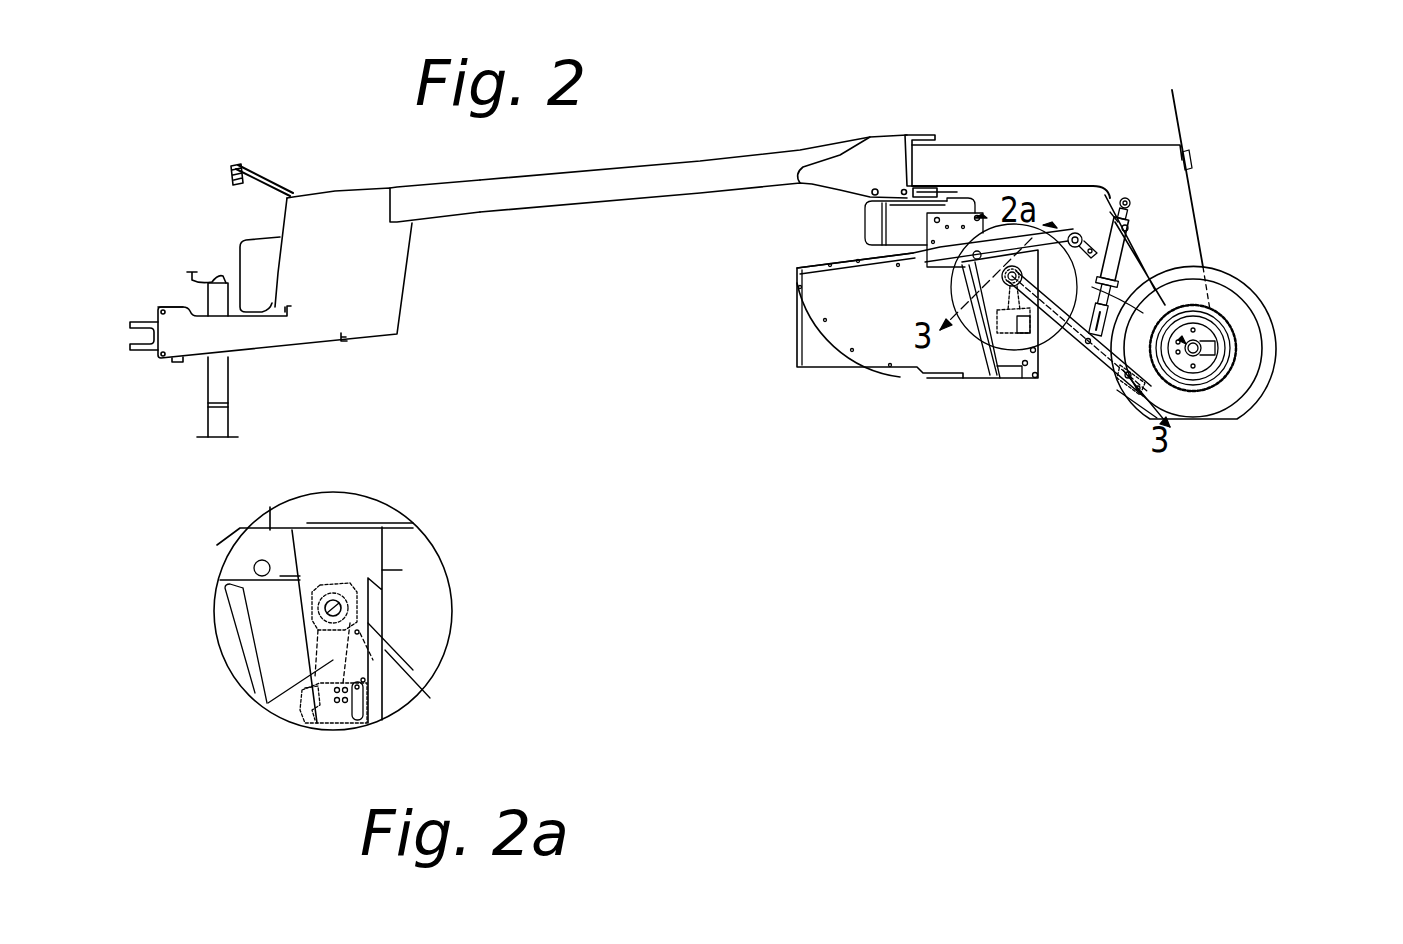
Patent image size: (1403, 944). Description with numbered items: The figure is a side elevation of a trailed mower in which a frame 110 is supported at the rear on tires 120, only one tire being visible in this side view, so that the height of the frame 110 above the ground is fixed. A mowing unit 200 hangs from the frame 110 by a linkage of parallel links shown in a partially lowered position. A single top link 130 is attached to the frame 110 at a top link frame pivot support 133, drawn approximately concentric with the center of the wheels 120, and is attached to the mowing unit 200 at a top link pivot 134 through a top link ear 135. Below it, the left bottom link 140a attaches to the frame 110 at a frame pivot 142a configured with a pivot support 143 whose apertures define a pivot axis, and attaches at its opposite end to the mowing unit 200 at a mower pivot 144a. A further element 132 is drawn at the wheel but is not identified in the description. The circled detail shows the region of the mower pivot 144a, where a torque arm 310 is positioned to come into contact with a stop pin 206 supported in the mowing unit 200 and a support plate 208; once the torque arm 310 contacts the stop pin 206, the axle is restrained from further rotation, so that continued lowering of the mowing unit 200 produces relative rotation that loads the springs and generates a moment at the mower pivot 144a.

In FIG. 2, the frame 110 is at (1065, 152).
In FIG. 2, the tires 120 is at (1214, 268).
In FIG. 2, the top link 130 is at (1140, 270).
In FIG. 2, the wheel rim 132 is at (1223, 307).
In FIG. 2, the top link frame pivot support 133 is at (1225, 334).
In FIG. 2, the top link pivot 134 is at (1100, 253).
In FIG. 2, the top link ear 135 is at (1058, 232).
In FIG. 2, the bottom link 140a is at (1100, 253).
In FIG. 2A, the bottom link 140a is at (400, 663).
In FIG. 2, the frame pivot 142a is at (1165, 350).
In FIG. 2, the pivot support 143 is at (1177, 413).
In FIG. 2, the mower pivot 144a is at (1033, 247).
In FIG. 2A, the mower pivot 144a is at (310, 620).
In FIG. 2, the mowing unit 200 is at (891, 317).
In FIG. 2, the stop pin 206 is at (1017, 380).
In FIG. 2A, the stop pin 206 is at (363, 702).
In FIG. 2A, the support plate 208 is at (303, 690).
In FIG. 2, the torque arm 310 is at (985, 378).
In FIG. 2A, the torque arm 310 is at (268, 703).